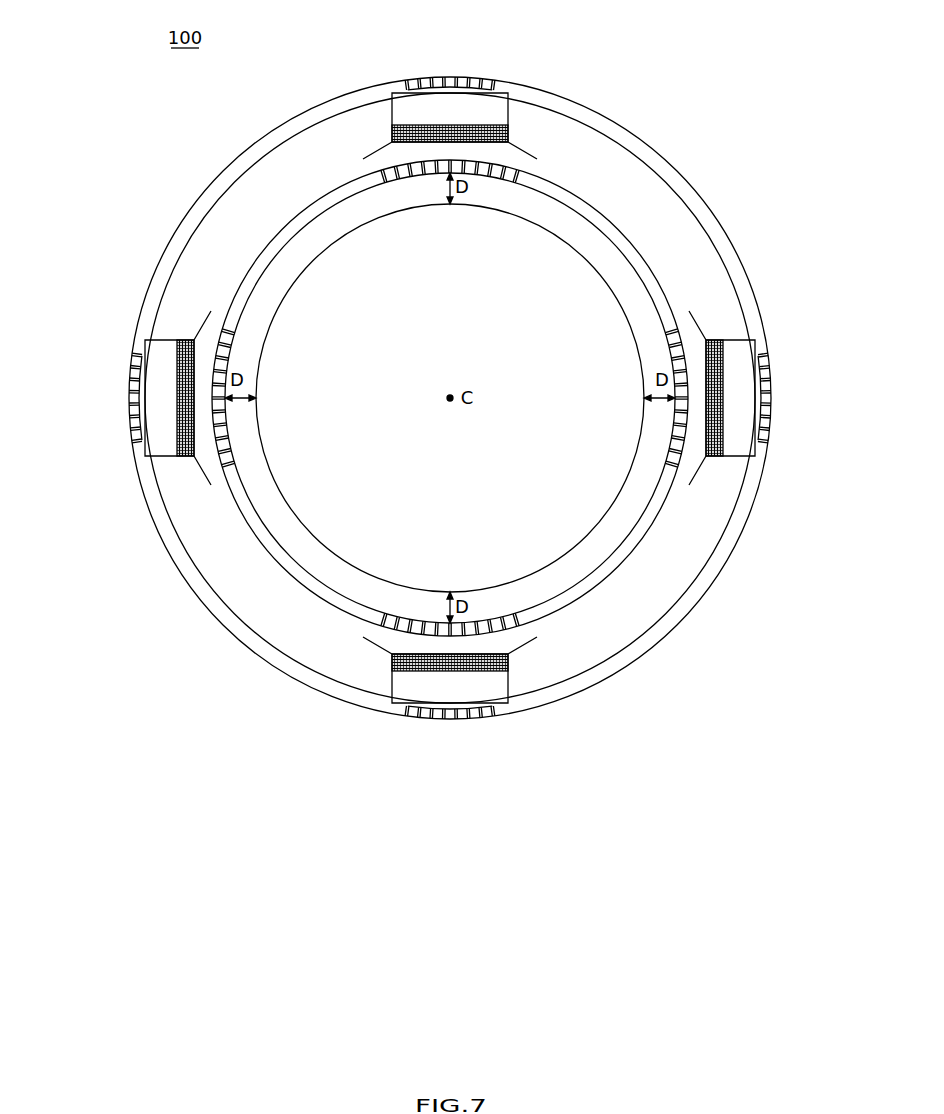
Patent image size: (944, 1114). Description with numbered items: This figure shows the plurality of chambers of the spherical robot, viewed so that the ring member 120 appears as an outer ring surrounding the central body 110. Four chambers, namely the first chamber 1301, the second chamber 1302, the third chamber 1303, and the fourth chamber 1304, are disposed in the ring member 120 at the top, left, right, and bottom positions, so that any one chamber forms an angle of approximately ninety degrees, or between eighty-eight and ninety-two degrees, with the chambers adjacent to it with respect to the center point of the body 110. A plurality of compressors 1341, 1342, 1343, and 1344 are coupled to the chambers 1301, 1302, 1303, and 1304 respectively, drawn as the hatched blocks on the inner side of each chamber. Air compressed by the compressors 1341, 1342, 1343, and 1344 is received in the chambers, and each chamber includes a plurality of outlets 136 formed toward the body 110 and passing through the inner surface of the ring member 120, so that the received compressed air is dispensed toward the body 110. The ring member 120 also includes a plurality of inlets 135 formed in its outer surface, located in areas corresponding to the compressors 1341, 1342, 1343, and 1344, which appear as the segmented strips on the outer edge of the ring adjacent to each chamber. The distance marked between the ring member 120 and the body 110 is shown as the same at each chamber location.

The body 110 is at (436, 340).
The ring member 120 is at (635, 126).
The inlets 135 is at (487, 77).
The outlets 136 is at (415, 160).
The first chamber 1301 is at (498, 130).
The second chamber 1302 is at (168, 336).
The third chamber 1303 is at (731, 458).
The fourth chamber 1304 is at (389, 678).
The compressor 1341 is at (512, 117).
The compressor 1342 is at (180, 350).
The compressor 1343 is at (713, 443).
The compressor 1344 is at (403, 662).